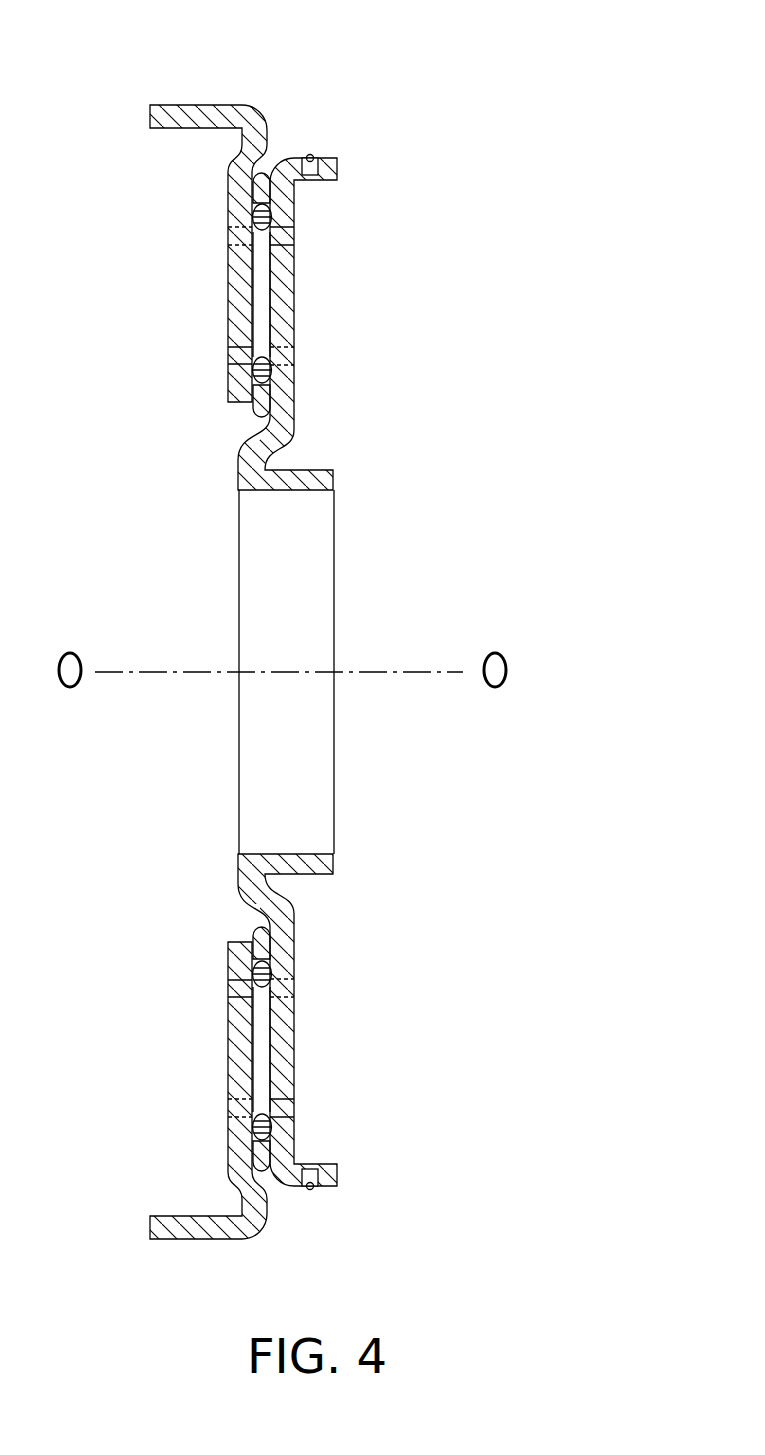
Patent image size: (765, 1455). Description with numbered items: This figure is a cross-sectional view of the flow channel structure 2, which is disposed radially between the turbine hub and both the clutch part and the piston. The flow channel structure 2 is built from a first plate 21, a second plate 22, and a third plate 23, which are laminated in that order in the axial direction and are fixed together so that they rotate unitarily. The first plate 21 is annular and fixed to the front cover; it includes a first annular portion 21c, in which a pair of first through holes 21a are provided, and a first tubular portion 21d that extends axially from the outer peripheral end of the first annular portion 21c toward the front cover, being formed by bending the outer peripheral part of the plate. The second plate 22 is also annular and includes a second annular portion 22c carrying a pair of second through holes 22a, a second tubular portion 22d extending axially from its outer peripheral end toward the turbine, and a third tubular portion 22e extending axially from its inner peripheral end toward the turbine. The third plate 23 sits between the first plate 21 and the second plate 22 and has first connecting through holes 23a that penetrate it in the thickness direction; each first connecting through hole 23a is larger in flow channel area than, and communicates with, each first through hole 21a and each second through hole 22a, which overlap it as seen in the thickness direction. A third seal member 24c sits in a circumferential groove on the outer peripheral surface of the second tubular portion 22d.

The flow channel structure 2 is at (482, 90).
The first plate 21 is at (203, 100).
The first through hole 21a is at (228, 355).
The first annular portion 21c is at (228, 275).
The first tubular portion 21d is at (168, 104).
The second plate 22 is at (340, 170).
The second through hole 22a is at (308, 231).
The second annular portion 22c is at (295, 317).
The second tubular portion 22d is at (330, 156).
The third tubular portion 22e is at (318, 470).
The third plate 23 is at (243, 413).
The first connecting through hole 23a is at (263, 276).
The third seal member 24c is at (309, 158).